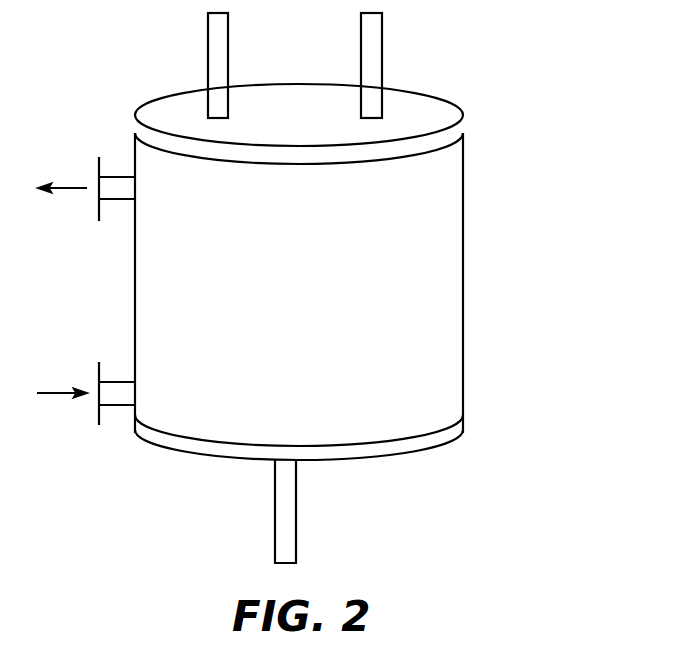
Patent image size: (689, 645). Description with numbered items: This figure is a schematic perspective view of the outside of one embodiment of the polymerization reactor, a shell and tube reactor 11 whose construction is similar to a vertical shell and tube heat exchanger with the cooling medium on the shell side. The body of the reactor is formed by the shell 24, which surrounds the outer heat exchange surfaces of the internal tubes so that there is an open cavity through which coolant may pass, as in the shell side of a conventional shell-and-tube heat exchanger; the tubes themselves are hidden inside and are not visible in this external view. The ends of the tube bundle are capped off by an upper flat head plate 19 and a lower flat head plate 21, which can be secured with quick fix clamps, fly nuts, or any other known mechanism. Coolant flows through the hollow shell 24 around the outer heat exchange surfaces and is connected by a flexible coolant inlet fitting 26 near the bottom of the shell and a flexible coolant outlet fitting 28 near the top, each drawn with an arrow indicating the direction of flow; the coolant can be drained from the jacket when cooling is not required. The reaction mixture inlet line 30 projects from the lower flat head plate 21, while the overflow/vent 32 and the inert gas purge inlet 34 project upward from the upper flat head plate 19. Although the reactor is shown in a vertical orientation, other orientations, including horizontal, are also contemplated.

The shell and tube reactor 11 is at (481, 181).
The upper flat head plate 19 is at (455, 135).
The lower flat head plate 21 is at (443, 429).
The shell 24 is at (298, 296).
The flexible coolant inlet fitting 26 is at (118, 408).
The flexible coolant outlet fitting 28 is at (118, 203).
The reaction mixture inlet line 30 is at (296, 522).
The overflow/vent 32 is at (228, 45).
The inert gas purge inlet 34 is at (382, 50).